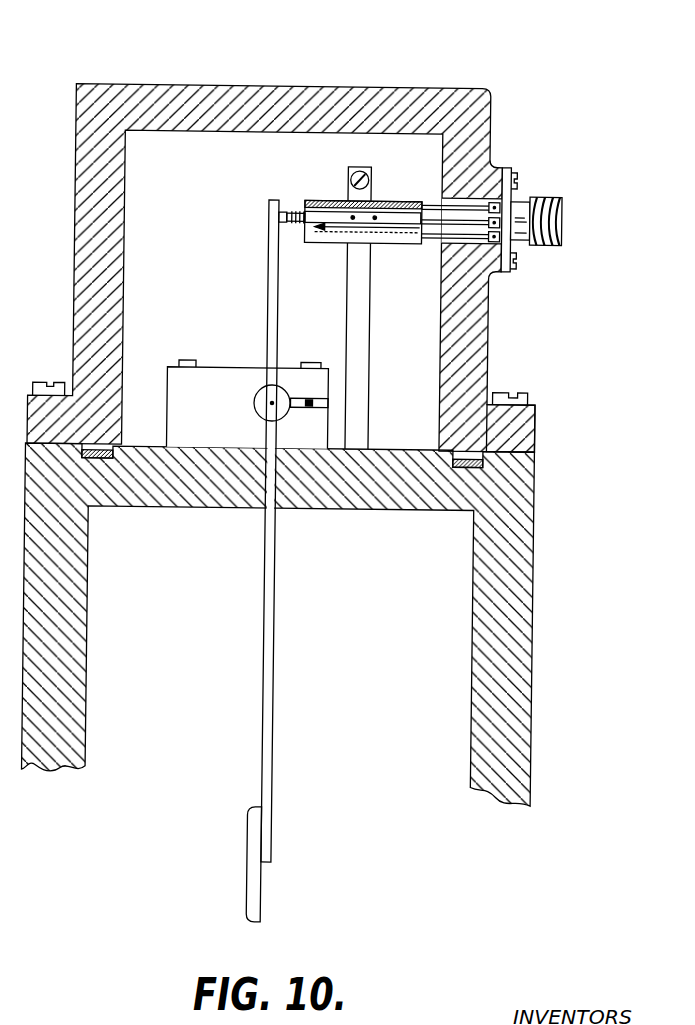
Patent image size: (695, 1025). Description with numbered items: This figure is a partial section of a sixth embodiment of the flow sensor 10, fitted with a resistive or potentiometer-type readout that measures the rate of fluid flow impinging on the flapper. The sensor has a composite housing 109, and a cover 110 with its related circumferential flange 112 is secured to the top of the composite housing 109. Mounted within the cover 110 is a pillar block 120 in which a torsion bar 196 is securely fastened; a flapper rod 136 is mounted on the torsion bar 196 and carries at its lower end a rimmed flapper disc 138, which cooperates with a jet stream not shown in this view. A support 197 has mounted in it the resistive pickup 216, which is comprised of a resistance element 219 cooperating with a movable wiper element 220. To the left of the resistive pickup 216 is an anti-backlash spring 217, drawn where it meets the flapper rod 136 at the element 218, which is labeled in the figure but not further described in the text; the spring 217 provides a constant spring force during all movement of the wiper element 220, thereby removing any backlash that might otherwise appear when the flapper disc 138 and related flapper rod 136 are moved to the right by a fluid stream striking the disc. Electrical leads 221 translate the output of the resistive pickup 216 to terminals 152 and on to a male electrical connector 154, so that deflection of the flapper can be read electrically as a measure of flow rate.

The flow sensor 10 is at (518, 67).
The composite housing 109 is at (535, 475).
The cover 110 is at (476, 314).
The circumferential flange 112 is at (530, 422).
The pillar block 120 is at (298, 437).
The flapper rod 136 is at (270, 625).
The rimmed flapper disc 138 is at (258, 880).
The terminals 152 is at (502, 230).
The male electrical connector 154 is at (562, 206).
The torsion bar 196 is at (281, 399).
The support 197 is at (365, 409).
The resistive pickup 216 is at (385, 199).
The anti-backlash spring 217 is at (297, 207).
The screw head 218 is at (280, 216).
The resistance element 219 is at (397, 226).
The movable wiper element 220 is at (367, 202).
The electrical leads 221 is at (468, 231).